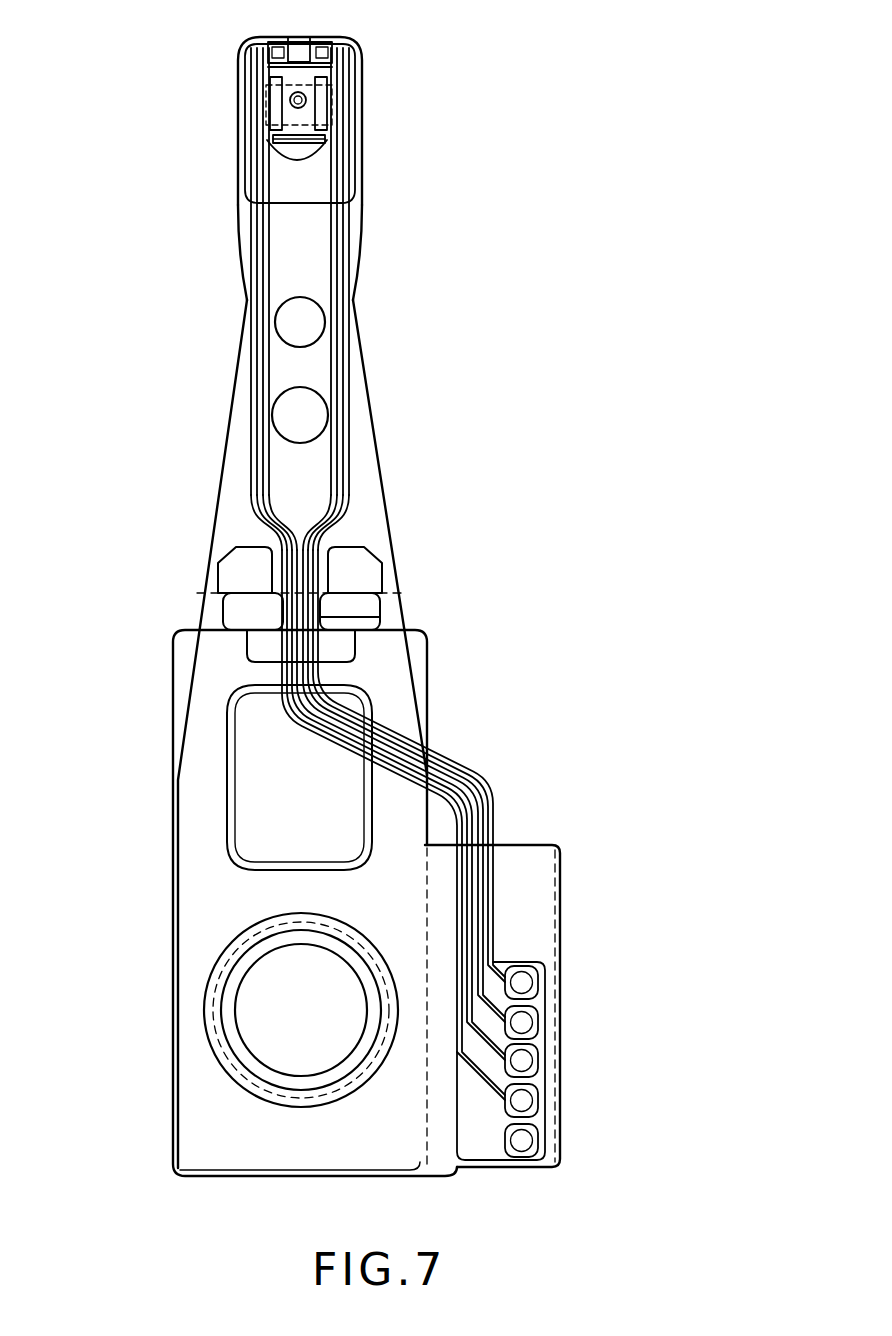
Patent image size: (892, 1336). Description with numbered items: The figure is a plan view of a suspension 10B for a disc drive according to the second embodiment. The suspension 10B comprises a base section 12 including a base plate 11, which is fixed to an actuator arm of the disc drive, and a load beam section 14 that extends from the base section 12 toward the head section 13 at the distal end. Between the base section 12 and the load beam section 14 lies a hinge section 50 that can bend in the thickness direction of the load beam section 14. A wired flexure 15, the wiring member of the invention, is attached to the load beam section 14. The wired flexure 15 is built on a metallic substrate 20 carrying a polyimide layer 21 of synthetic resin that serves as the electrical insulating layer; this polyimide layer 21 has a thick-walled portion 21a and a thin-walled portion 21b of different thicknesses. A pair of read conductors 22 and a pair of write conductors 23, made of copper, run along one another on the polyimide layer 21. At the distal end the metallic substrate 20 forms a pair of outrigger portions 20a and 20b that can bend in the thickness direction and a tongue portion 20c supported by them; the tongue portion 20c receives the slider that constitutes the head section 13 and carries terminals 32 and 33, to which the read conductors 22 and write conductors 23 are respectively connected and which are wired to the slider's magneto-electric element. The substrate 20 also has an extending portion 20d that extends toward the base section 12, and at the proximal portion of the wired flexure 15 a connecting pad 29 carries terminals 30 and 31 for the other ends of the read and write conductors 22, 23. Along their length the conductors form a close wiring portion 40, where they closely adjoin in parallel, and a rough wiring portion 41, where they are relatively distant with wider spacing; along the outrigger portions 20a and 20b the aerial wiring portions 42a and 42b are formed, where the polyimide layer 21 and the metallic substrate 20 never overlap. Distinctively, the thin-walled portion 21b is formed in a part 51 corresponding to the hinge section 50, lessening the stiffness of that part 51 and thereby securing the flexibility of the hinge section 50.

The suspension for disc drive 10B is at (497, 319).
The base plate 11 is at (173, 902).
The base section 12 is at (208, 996).
The head section 13 is at (289, 166).
The load beam section 14 is at (212, 524).
The wired flexure 15 is at (358, 497).
The metallic substrate 20 is at (280, 275).
The outrigger portion 20a is at (240, 118).
The outrigger portion 20b is at (360, 124).
The tongue portion 20c is at (305, 150).
The extending portion 20d is at (522, 843).
The polyimide layer 21 is at (300, 525).
The thick-walled portion 21a is at (348, 93).
The thin-walled portion 21b is at (353, 413).
The read conductors 22 is at (258, 372).
The write conductors 23 is at (348, 368).
The connecting pad 29 is at (546, 1115).
The terminals 30 is at (522, 1097).
The terminals 31 is at (522, 1018).
The terminals 32 is at (268, 37).
The terminals 33 is at (345, 49).
The close wiring portion 40 is at (397, 743).
The rough wiring portion 41 is at (353, 447).
The aerial wiring portion 42a is at (250, 152).
The aerial wiring portion 42b is at (350, 153).
The hinge section 50 is at (405, 600).
The part corresponding to the hinge section 51 is at (372, 617).